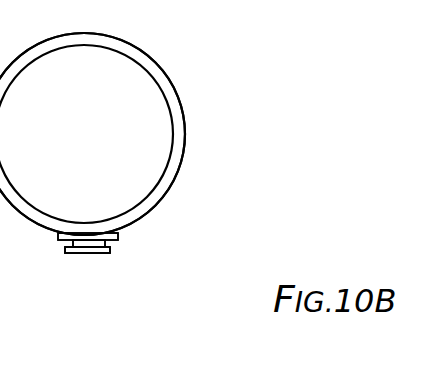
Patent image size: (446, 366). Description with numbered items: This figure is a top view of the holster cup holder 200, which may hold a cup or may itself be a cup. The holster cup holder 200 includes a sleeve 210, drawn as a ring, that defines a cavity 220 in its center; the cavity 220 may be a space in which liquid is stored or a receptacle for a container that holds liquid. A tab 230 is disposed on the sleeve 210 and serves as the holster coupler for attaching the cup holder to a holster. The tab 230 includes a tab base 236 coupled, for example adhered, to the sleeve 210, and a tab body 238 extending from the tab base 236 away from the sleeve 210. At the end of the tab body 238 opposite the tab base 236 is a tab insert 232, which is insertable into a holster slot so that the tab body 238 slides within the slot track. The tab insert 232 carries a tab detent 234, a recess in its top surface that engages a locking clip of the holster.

The holster cup holder 200 is at (185, 50).
The sleeve 210 is at (185, 130).
The cavity 220 is at (137, 103).
The tab 230 is at (132, 241).
The tab insert 232 is at (110, 252).
The tab detent 234 is at (93, 258).
The tab base 236 is at (118, 234).
The tab body 238 is at (72, 243).